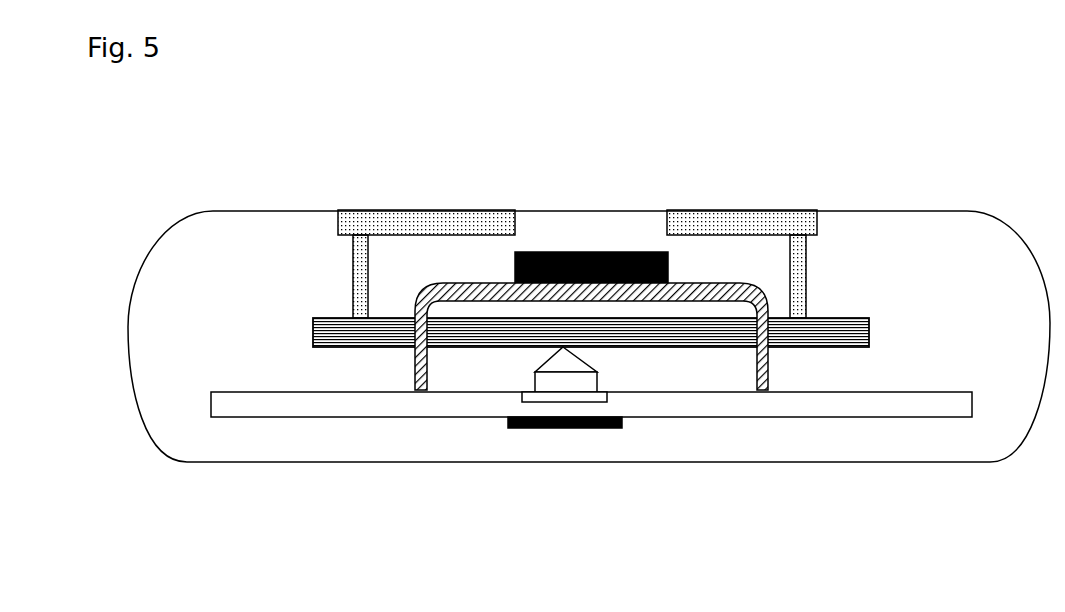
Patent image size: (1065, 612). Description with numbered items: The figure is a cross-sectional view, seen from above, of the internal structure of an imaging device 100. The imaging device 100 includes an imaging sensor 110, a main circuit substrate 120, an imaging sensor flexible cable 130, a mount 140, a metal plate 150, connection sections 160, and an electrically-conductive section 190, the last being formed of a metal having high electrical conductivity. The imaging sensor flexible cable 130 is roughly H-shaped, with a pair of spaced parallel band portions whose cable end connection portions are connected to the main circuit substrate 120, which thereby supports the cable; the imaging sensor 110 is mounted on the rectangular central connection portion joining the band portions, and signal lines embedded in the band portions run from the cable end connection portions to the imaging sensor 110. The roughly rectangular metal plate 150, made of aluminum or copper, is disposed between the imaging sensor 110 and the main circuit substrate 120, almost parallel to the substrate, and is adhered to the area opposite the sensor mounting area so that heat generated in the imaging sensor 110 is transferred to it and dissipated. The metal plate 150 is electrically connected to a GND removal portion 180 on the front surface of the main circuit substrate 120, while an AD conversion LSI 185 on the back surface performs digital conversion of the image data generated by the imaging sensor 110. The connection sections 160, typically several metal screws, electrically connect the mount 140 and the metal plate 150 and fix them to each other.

The imaging device 100 is at (398, 181).
The imaging sensor 110 is at (560, 252).
The main circuit substrate 120 is at (923, 413).
The imaging sensor flexible cable 130 is at (763, 362).
The mount 140 is at (802, 222).
The metal plate 150 is at (353, 342).
The connection sections 160 is at (355, 275).
The GND removal portion 180 is at (522, 396).
The AD conversion LSI 185 is at (565, 428).
The electrically-conductive section 190 is at (533, 382).